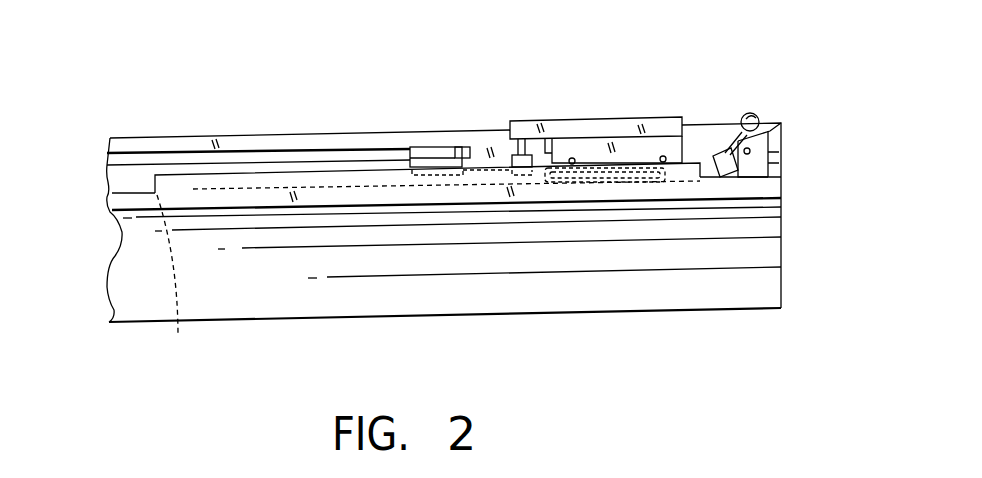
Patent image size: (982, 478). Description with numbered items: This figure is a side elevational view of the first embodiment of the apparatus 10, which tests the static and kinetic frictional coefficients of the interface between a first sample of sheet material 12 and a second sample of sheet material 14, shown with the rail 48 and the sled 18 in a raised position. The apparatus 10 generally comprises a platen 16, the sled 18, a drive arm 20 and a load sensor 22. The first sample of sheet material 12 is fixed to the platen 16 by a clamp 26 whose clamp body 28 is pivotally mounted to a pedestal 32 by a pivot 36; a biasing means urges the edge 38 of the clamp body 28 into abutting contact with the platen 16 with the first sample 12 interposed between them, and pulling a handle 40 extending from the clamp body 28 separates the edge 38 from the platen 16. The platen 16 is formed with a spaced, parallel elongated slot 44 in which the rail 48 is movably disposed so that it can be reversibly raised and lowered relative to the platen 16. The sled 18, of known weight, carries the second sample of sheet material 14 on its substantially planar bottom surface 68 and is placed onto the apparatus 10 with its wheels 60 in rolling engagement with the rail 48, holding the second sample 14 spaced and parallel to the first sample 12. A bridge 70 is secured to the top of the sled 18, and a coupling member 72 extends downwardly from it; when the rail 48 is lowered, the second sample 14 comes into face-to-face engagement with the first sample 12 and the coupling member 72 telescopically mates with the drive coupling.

The apparatus 10 is at (248, 112).
The first sample of sheet material 12 is at (267, 182).
The second sample of sheet material 14 is at (550, 173).
The platen 16 is at (128, 192).
The sled 18 is at (537, 114).
The drive arm 20 is at (430, 153).
The load sensor 22 is at (410, 160).
The clamp 26 is at (710, 148).
The clamp body 28 is at (782, 122).
The pedestal 32 is at (781, 163).
The pivot 36 is at (748, 154).
The edge 38 is at (722, 178).
The handle 40 is at (758, 113).
The elongated slot 44 is at (174, 282).
The rail 48 is at (177, 173).
The wheel 60 is at (663, 163).
The bottom surface 68 is at (667, 173).
The bridge 70 is at (623, 118).
The coupling member 72 is at (513, 153).